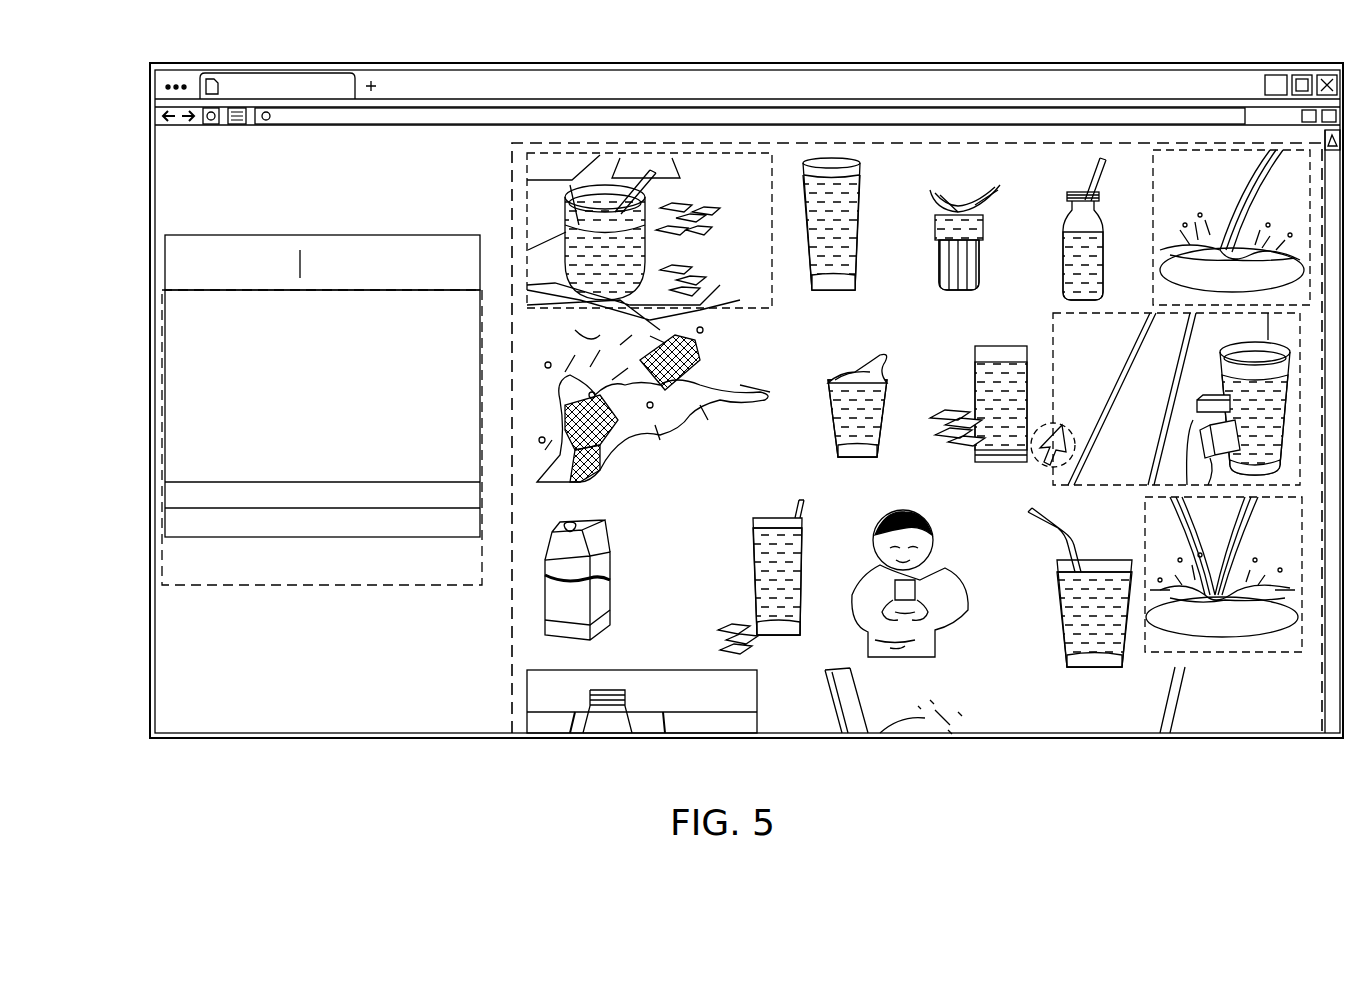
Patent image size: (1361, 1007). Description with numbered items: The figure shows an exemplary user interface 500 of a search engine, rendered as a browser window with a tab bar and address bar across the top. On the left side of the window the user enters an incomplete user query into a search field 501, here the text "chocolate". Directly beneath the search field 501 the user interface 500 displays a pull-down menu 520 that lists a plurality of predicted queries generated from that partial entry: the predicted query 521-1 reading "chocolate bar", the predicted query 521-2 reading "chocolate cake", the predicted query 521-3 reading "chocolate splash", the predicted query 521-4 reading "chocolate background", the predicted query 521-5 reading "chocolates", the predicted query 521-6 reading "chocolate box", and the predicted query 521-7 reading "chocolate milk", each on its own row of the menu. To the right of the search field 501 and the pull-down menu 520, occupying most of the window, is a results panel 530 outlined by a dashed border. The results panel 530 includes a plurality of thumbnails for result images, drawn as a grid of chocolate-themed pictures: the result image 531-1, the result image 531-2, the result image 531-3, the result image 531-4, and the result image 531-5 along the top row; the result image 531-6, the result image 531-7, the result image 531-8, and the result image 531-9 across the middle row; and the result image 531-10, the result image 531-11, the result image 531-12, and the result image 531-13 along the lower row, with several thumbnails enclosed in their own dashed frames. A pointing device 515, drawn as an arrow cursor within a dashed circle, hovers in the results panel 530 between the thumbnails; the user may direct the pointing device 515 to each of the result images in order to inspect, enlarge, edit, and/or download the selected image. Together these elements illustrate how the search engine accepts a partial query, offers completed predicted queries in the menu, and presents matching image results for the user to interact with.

The user interface 500 is at (298, 42).
The search field 501 is at (400, 275).
The pointing device 515 is at (1060, 470).
The instant complete suggestion list 520 is at (362, 572).
The predicted query 521-1 is at (180, 337).
The predicted query 521-2 is at (180, 364).
The predicted query 521-3 is at (180, 391).
The predicted query 521-4 is at (180, 418).
The predicted query 521-5 is at (180, 444).
The predicted query 521-6 is at (180, 471).
The predicted query 521-7 is at (180, 498).
The results panel 530 is at (835, 140).
The result image 531-1 is at (665, 245).
The result image 531-2 is at (833, 262).
The result image 531-3 is at (958, 262).
The result image 531-4 is at (1060, 232).
The result image 531-5 is at (1215, 240).
The result image 531-6 is at (615, 400).
The result image 531-7 is at (862, 437).
The result image 531-8 is at (1003, 463).
The result image 531-9 is at (1245, 428).
The result image 531-10 is at (610, 578).
The result image 531-11 is at (778, 578).
The result image 531-12 is at (940, 635).
The result image 531-13 is at (1087, 640).